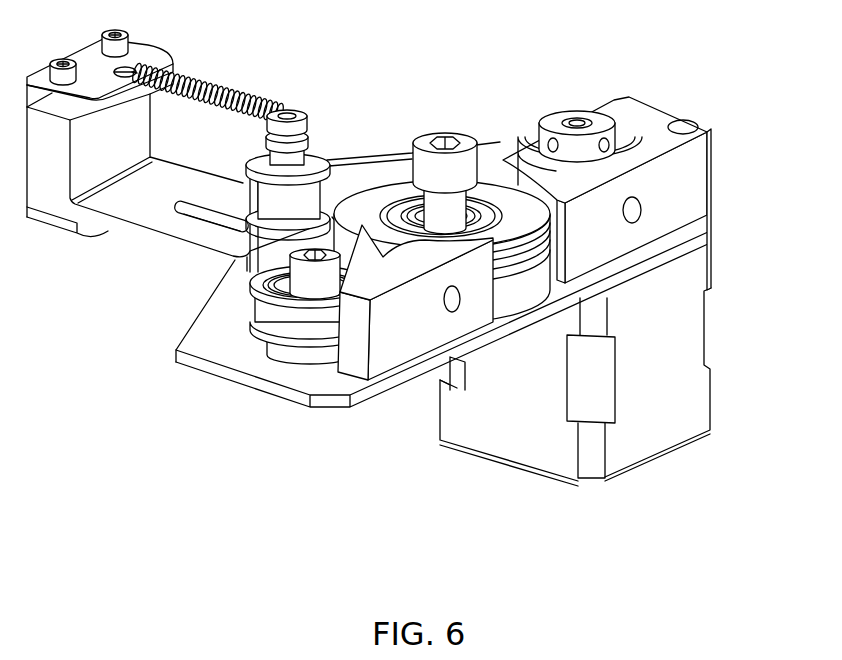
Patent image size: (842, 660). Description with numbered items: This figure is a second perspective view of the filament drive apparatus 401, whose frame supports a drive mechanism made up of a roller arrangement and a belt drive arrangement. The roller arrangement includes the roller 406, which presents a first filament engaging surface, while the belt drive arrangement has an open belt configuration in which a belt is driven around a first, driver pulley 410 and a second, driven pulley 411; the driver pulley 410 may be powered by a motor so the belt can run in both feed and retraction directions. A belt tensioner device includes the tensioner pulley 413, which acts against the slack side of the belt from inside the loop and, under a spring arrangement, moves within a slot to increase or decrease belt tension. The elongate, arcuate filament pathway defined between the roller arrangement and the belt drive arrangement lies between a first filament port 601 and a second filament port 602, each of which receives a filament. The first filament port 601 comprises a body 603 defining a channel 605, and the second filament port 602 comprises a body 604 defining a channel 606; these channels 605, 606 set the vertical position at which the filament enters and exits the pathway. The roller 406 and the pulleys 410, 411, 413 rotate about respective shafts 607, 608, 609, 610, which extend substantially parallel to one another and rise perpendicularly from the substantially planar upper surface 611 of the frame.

The filament drive apparatus 401 is at (650, 503).
The roller 406 is at (484, 205).
The driver pulley 410 is at (622, 135).
The driven pulley 411 is at (272, 283).
The tensioner pulley 413 is at (316, 150).
The first filament port 601 is at (488, 296).
The second filament port 602 is at (462, 319).
The body 603 is at (690, 173).
The body 604 is at (398, 358).
The channel 605 is at (646, 220).
The channel 606 is at (438, 303).
The shaft 607 is at (442, 137).
The shaft 608 is at (575, 120).
The shaft 609 is at (335, 235).
The shaft 610 is at (292, 112).
The substantially planar upper surface 611 is at (248, 355).